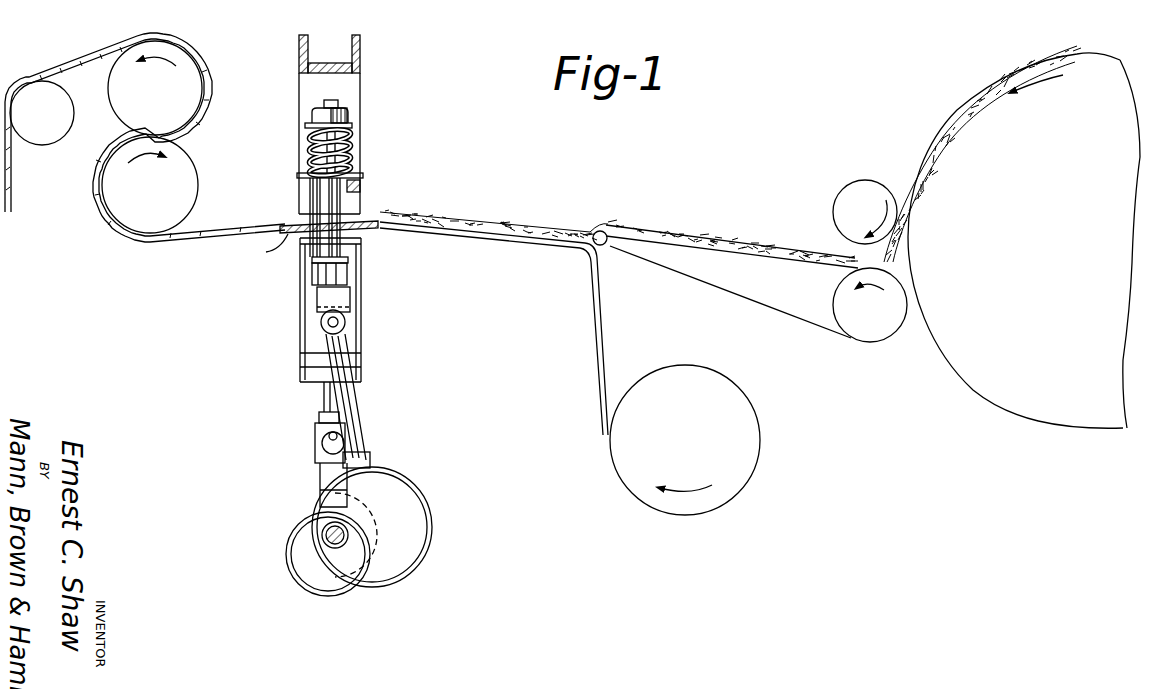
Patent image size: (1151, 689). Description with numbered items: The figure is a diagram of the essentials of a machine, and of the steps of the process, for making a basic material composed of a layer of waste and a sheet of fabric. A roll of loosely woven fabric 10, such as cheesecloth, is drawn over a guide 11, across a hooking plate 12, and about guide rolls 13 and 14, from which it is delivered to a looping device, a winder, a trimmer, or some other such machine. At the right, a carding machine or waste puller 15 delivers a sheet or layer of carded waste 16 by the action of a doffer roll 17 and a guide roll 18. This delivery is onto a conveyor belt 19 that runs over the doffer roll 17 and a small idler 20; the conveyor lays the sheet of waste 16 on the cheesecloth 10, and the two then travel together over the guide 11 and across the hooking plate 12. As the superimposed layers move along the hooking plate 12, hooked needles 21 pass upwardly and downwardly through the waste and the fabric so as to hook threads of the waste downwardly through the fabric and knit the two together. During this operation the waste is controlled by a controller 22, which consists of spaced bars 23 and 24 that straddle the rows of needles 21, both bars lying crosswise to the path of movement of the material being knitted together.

The roll of loosely woven fabric 10 is at (685, 440).
The guide 11 is at (575, 250).
The hooking plate 12 is at (373, 232).
The guide roll 13 is at (155, 88).
The guide roll 14 is at (150, 185).
The carding machine or waste puller 15 is at (978, 370).
The sheet of carded waste 16 is at (771, 237).
The doffer roll 17 is at (874, 334).
The guide roll 18 is at (838, 203).
The conveyor belt 19 is at (722, 293).
The small idler 20 is at (606, 246).
The hooked needles 21 is at (350, 247).
The controller 22 is at (356, 176).
The bar 23 is at (311, 192).
The bar 24 is at (360, 188).